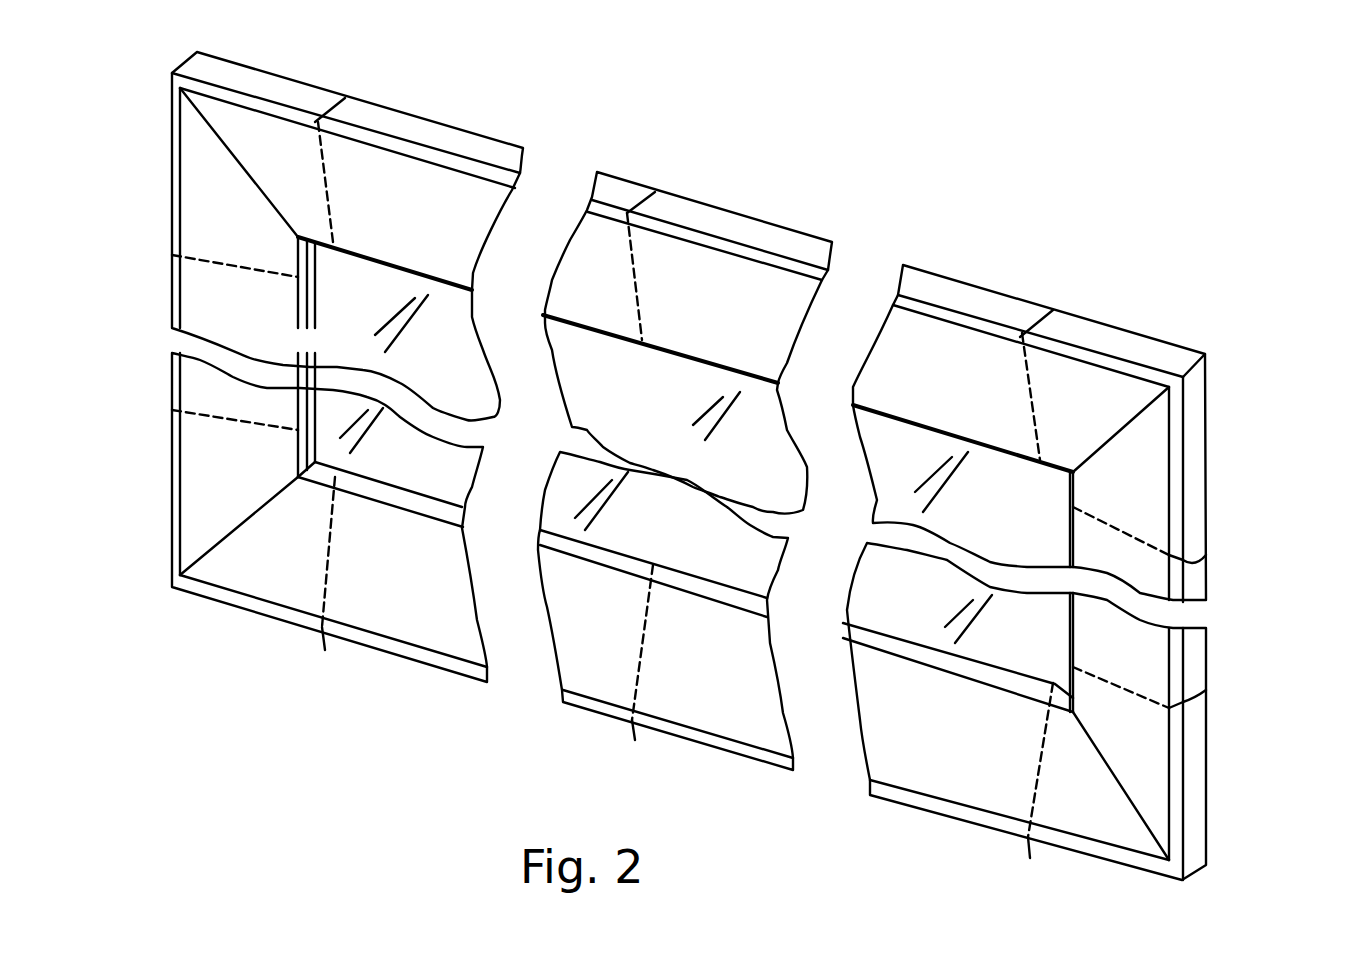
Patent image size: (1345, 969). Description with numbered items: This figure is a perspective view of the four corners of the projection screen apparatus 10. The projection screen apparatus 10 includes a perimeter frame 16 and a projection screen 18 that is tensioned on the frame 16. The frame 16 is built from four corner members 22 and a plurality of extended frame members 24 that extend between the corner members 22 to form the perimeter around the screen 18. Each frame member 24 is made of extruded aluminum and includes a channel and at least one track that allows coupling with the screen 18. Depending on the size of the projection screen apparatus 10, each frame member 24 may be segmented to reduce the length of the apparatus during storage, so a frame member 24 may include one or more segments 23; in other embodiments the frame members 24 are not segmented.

The projection screen apparatus 10 is at (747, 451).
The perimeter frame 16 is at (943, 265).
The projection screen 18 is at (1021, 534).
The corner member 22 is at (268, 135).
The segment 23 is at (622, 190).
The extended frame member 24 is at (398, 642).